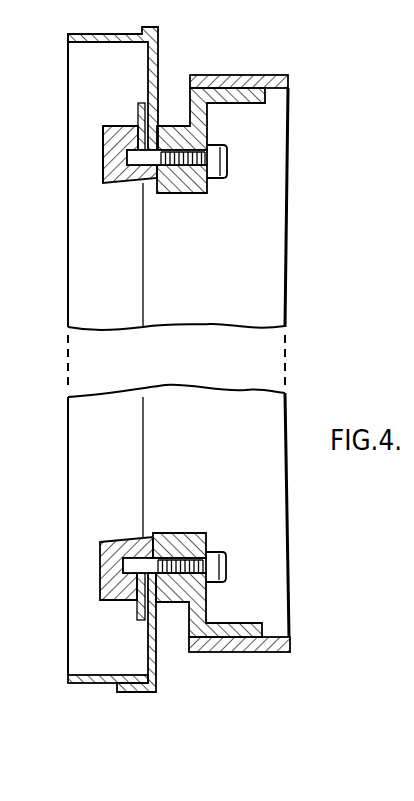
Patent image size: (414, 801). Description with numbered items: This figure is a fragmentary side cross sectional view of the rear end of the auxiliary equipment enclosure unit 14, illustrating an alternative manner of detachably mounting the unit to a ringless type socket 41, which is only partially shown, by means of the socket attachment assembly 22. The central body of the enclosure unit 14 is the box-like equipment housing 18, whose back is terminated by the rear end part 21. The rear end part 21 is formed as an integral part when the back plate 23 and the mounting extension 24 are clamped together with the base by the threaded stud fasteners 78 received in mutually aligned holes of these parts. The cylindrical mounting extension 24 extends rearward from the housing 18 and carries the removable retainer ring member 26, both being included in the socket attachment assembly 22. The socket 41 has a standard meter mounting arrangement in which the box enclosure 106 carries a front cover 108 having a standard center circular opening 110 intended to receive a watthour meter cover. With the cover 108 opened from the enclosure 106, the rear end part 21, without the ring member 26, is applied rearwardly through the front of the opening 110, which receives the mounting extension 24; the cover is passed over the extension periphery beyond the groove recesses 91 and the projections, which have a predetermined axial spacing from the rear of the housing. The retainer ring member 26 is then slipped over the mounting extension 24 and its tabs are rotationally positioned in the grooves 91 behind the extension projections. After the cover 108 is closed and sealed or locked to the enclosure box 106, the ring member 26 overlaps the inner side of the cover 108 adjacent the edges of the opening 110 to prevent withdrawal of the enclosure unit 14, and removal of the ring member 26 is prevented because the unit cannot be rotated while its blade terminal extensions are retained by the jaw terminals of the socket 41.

The auxiliary equipment enclosure unit 14 is at (215, 230).
The equipment housing 18 is at (262, 76).
The rear end part 21 is at (103, 146).
The socket attachment assembly 22 is at (160, 117).
The back plate 23 is at (207, 118).
The mounting extension 24 is at (113, 126).
The retainer ring member 26 is at (142, 98).
The ringless type socket 41 is at (56, 285).
The threaded stud fasteners 78 is at (218, 180).
The groove recesses 91 is at (104, 597).
The box enclosure 106 is at (107, 680).
The front cover 108 is at (156, 664).
The center circular opening 110 is at (165, 603).